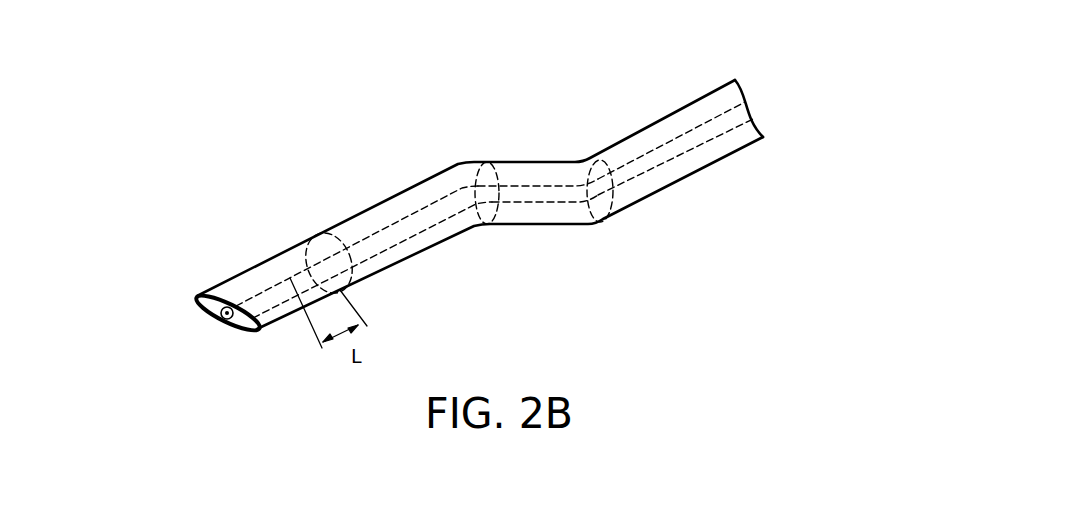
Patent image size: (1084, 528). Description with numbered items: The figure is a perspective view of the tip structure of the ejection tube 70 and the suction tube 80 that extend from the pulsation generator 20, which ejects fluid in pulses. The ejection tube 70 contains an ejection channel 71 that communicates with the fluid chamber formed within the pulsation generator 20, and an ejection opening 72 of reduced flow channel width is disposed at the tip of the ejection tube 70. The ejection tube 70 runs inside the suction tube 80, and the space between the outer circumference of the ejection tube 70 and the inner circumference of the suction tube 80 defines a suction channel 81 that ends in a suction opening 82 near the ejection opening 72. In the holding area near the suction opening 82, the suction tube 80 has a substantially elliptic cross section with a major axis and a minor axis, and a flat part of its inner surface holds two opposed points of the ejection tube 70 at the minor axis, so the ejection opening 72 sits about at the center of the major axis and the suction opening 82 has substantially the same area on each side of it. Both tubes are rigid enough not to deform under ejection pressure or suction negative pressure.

The pulsation generator 20 is at (709, 139).
The ejection tube 70 is at (510, 183).
The ejection channel 71 is at (558, 190).
The ejection opening 72 is at (224, 322).
The suction tube 80 is at (437, 172).
The suction channel 81 is at (375, 215).
The suction opening 82 is at (198, 307).